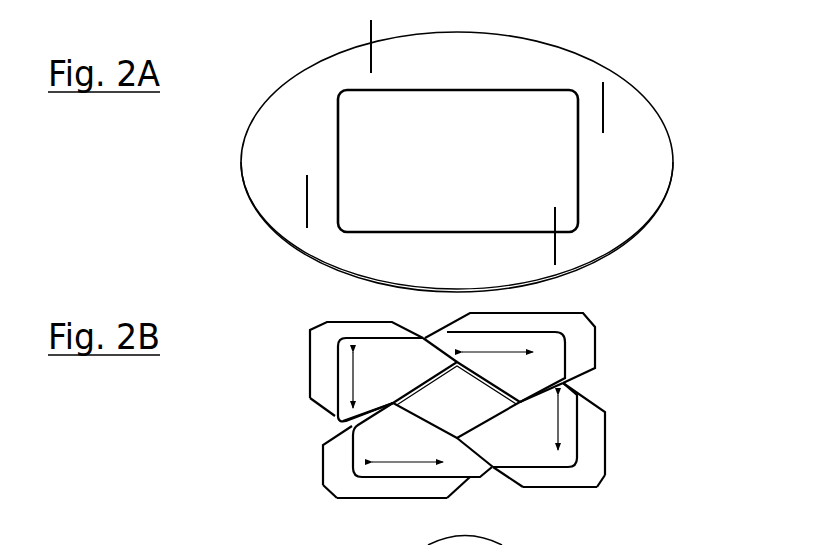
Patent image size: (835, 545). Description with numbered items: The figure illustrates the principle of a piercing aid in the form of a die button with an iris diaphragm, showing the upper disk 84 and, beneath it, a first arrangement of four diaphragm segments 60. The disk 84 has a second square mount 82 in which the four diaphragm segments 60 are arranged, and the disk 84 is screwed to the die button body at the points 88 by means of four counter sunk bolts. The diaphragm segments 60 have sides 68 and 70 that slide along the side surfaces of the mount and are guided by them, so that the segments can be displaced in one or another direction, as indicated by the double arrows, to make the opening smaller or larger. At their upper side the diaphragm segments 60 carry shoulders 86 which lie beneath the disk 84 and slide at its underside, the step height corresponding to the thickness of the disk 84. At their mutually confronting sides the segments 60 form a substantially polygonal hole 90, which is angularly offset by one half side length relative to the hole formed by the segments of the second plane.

In FIG. 2A, the second square mount 82 is at (471, 180).
In FIG. 2A, the disk 84 is at (618, 226).
In FIG. 2A, the points 88 is at (372, 52).
In FIG. 2B, the diaphragm segments 60 is at (348, 398).
In FIG. 2B, the side 68 is at (336, 325).
In FIG. 2B, the side 70 is at (335, 382).
In FIG. 2B, the shoulders 86 is at (323, 368).
In FIG. 2B, the polygonal hole 90 is at (474, 419).